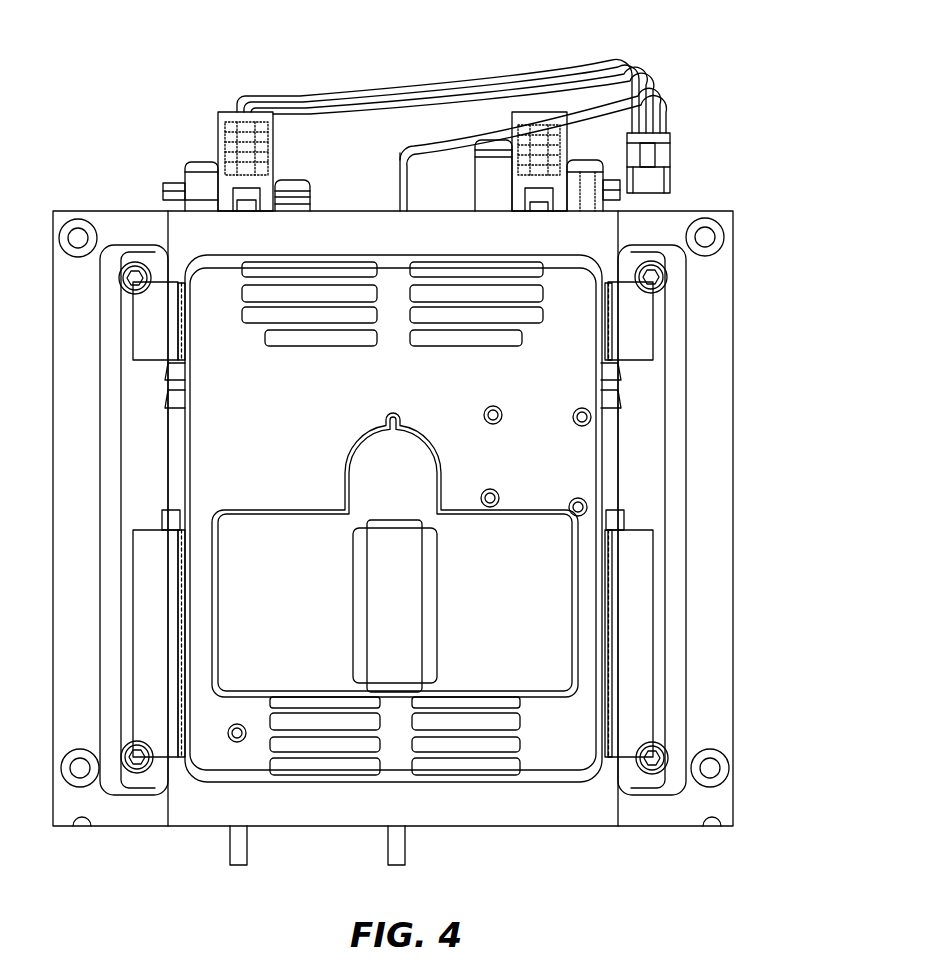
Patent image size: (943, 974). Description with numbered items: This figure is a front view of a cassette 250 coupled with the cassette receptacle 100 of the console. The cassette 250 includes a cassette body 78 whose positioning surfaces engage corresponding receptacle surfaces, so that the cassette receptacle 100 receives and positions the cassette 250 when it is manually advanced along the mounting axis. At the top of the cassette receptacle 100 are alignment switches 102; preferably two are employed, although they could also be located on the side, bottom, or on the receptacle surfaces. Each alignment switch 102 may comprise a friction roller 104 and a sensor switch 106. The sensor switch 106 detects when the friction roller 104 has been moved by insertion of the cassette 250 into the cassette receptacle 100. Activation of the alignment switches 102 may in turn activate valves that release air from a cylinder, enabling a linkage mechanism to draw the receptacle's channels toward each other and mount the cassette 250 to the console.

The cassette body 78 is at (556, 362).
The cassette receptacle 100 is at (634, 447).
The alignment switch 102 is at (293, 151).
The friction roller 104 is at (560, 145).
The sensor switch 106 is at (588, 185).
The cassette 250 is at (608, 552).